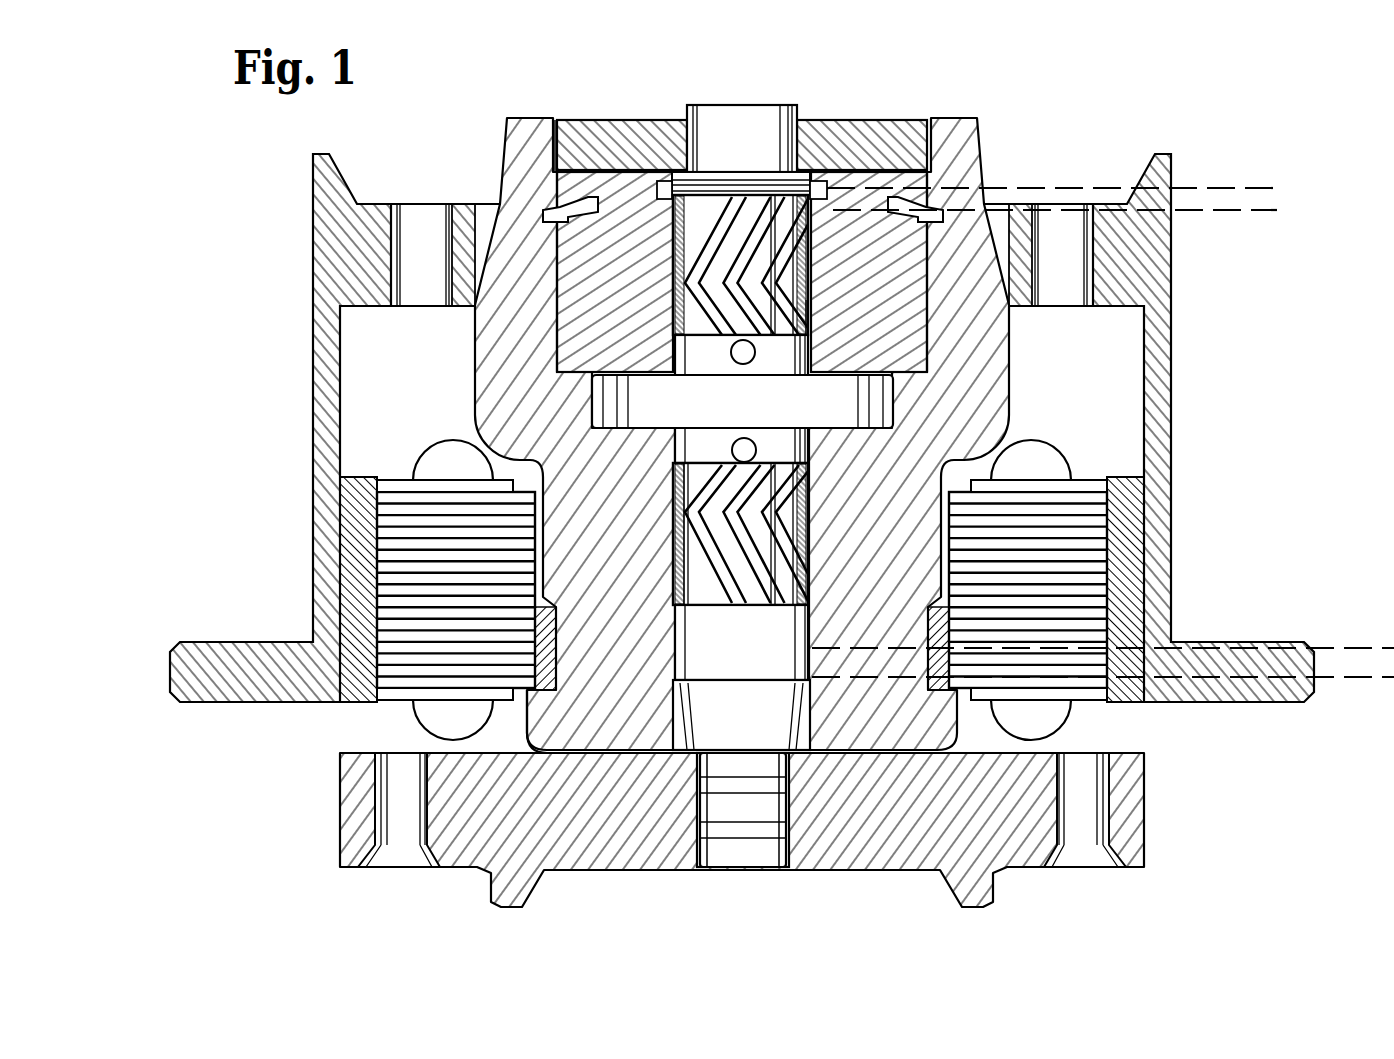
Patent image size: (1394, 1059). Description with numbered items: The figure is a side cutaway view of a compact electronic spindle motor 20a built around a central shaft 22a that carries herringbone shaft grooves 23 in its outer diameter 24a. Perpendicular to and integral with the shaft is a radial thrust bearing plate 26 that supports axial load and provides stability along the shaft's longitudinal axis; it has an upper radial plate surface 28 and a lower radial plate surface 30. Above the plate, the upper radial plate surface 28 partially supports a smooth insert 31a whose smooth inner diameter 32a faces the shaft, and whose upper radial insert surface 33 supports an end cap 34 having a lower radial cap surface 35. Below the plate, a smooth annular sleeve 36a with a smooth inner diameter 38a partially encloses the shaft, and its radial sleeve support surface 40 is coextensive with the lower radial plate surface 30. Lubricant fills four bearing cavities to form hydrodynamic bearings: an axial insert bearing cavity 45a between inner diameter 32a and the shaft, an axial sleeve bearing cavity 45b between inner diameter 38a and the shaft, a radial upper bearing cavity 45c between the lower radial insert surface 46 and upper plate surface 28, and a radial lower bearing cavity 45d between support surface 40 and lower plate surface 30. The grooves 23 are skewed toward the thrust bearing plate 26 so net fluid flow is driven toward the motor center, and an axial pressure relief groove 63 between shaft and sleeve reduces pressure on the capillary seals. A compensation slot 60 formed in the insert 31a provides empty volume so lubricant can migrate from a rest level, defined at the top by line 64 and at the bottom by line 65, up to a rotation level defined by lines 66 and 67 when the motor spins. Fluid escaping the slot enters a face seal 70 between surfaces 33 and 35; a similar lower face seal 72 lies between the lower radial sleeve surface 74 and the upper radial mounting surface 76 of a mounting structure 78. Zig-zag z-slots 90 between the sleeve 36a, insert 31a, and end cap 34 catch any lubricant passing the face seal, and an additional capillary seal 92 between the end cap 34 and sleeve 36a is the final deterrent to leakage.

The electronic spindle motor 20a is at (140, 313).
The central shaft 22a is at (736, 855).
The shaft grooves 23 is at (782, 570).
The outer diameter 24a is at (745, 549).
The radial thrust bearing plate 26 is at (744, 425).
The upper radial plate surface 28 is at (657, 372).
The lower radial plate surface 30 is at (623, 430).
The smooth insert 31a is at (935, 355).
The smooth inner diameter 32a is at (745, 280).
The upper radial insert surface 33 is at (956, 401).
The end cap 34 is at (820, 137).
The lower radial cap surface 35 is at (637, 183).
The smooth annular sleeve 36a is at (990, 385).
The smooth inner diameter 38a is at (675, 585).
The radial sleeve support surface 40 is at (658, 420).
The axial insert bearing cavity 45a is at (812, 312).
The axial sleeve bearing cavity 45b is at (673, 547).
The radial upper bearing cavity 45c is at (860, 365).
The radial lower bearing cavity 45d is at (840, 432).
The lower radial insert surface 46 is at (564, 365).
The compensation slot 60 is at (661, 183).
The axial pressure relief groove 63 is at (812, 637).
The rest level line 64 is at (1225, 210).
The rest level line 65 is at (1340, 677).
The rotation level line 66 is at (1205, 188).
The rotation level line 67 is at (1343, 648).
The face seal 70 is at (850, 160).
The lower face seal 72 is at (742, 809).
The lower radial sleeve surface 74 is at (643, 757).
The upper radial mounting surface 76 is at (583, 723).
The mounting structure 78 is at (903, 847).
The z-slots 90 is at (545, 410).
The capillary seal 92 is at (558, 140).